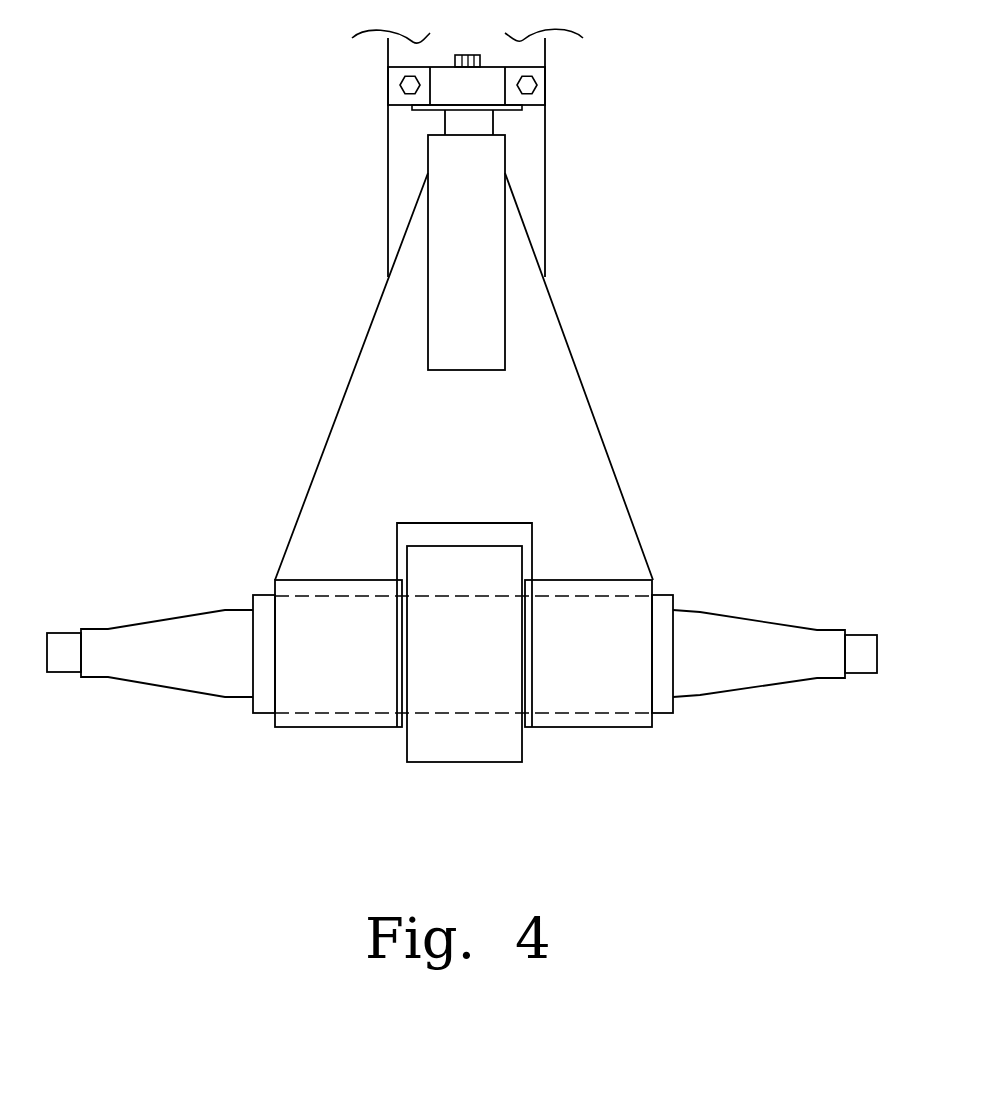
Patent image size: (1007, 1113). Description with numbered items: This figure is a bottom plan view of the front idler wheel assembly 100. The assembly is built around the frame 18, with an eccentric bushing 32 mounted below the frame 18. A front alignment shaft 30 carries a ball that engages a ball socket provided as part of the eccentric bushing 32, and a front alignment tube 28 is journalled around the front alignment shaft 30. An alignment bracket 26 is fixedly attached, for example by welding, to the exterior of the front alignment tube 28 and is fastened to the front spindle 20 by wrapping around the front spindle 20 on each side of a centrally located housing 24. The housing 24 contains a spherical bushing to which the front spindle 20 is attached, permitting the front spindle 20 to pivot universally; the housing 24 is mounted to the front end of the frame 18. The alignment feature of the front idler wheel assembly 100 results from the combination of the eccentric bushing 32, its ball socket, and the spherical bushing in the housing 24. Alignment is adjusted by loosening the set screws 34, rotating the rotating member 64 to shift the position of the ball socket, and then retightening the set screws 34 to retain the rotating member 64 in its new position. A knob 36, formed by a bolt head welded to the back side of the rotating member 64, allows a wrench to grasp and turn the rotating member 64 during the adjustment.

The front idler wheel assembly 100 is at (143, 172).
The frame 18 is at (403, 180).
The front spindle 20 is at (173, 677).
The housing 24 is at (477, 748).
The alignment bracket 26 is at (578, 398).
The front alignment tube 28 is at (442, 285).
The front alignment shaft 30 is at (477, 123).
The eccentric bushing 32 is at (490, 85).
The set screws 34 is at (400, 87).
The knob 36 is at (467, 55).
The rotating member 64 is at (428, 110).